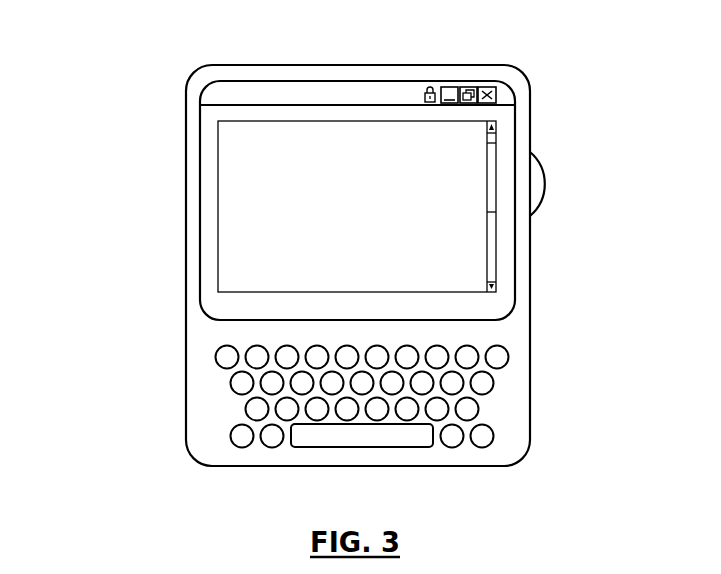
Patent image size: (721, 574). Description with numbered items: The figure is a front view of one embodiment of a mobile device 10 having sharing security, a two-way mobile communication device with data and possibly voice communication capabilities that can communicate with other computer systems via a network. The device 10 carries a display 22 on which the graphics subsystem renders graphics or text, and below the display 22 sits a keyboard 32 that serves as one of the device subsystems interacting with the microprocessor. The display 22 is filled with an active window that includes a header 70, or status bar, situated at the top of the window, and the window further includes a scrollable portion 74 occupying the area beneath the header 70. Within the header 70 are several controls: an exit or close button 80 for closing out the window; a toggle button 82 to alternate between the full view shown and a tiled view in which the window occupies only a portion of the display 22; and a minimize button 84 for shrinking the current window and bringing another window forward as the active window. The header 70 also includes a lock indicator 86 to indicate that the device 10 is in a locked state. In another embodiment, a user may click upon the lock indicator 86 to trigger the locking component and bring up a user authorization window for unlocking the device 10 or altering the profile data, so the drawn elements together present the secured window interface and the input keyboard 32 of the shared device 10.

The mobile device 10 is at (150, 38).
The display 22 is at (193, 328).
The keyboard 32 is at (517, 410).
The header 70 is at (250, 98).
The scrollable portion 74 is at (453, 163).
The close button 80 is at (498, 92).
The toggle button 82 is at (472, 82).
The minimize button 84 is at (449, 86).
The lock indicator 86 is at (412, 84).